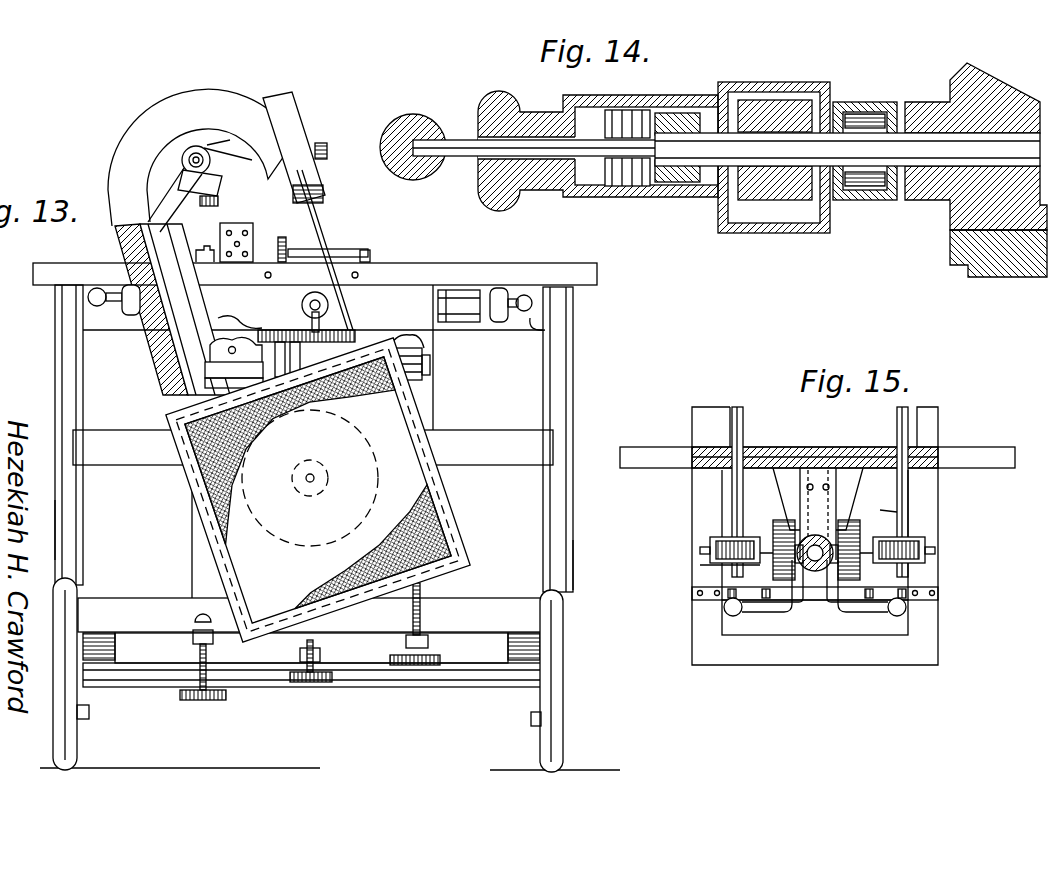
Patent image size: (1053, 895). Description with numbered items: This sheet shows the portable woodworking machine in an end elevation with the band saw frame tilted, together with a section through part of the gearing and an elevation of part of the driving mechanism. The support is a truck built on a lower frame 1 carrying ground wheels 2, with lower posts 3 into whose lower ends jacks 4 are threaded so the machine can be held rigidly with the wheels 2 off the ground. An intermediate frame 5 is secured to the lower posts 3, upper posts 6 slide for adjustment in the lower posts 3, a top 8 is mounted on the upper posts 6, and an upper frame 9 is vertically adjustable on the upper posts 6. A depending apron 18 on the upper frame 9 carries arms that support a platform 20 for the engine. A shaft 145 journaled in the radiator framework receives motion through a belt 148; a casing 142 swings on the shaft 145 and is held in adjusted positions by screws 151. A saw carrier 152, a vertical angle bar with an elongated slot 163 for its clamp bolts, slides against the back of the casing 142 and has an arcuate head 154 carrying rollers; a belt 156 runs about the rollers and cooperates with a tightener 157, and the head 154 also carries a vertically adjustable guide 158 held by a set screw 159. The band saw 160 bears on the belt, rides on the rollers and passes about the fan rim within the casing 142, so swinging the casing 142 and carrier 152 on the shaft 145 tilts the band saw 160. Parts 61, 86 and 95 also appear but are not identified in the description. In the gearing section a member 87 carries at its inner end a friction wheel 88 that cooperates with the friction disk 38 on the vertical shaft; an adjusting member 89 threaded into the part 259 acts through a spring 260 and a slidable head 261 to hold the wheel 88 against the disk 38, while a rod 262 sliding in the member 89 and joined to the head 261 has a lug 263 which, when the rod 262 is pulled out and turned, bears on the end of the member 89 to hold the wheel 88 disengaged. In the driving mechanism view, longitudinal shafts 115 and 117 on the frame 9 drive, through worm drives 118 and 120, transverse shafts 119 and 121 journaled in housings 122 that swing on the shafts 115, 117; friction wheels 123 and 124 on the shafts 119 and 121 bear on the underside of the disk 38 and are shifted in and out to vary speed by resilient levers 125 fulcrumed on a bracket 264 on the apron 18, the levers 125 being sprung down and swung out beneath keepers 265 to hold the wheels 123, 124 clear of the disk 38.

In FIG. 13, the lower frame 1 is at (128, 605).
In FIG. 13, the ground wheels 2 is at (77, 755).
In FIG. 13, the lower posts 3 is at (78, 520).
In FIG. 13, the jacks 4 is at (89, 712).
In FIG. 13, the intermediate frame 5 is at (509, 448).
In FIG. 13, the upper posts 6 is at (55, 372).
In FIG. 13, the top 8 is at (404, 265).
In FIG. 13, the upper frame 9 is at (573, 340).
In FIG. 13, the apron 18 is at (212, 365).
In FIG. 13, the platform 20 is at (300, 314).
In FIG. 13, the friction disk 38 is at (340, 304).
In FIG. 14, the friction disk 38 is at (985, 270).
In FIG. 13, the block 61 is at (281, 240).
In FIG. 14, the collar 86 is at (768, 110).
In FIG. 14, the shaft 87 is at (912, 200).
In FIG. 14, the friction wheel 88 is at (985, 80).
In FIG. 13, the adjusting member 89 is at (498, 323).
In FIG. 14, the adjusting member 89 is at (488, 102).
In FIG. 13, the knob 95 is at (100, 290).
In FIG. 15, the longitudinal shaft 115 is at (748, 405).
In FIG. 15, the longitudinal shaft 117 is at (912, 405).
In FIG. 15, the worm drive 118 is at (728, 565).
In FIG. 13, the transverse shaft 119 is at (222, 318).
In FIG. 15, the transverse shaft 119 is at (700, 550).
In FIG. 15, the worm drive 120 is at (910, 540).
In FIG. 15, the transverse shaft 121 is at (935, 554).
In FIG. 13, the housings 122 is at (215, 380).
In FIG. 15, the housings 122 is at (712, 540).
In FIG. 13, the friction wheel 123 is at (275, 332).
In FIG. 15, the friction wheel 123 is at (780, 520).
In FIG. 15, the friction wheel 124 is at (852, 520).
In FIG. 15, the levers 125 is at (775, 615).
In FIG. 13, the casing 142 is at (468, 535).
In FIG. 13, the shaft 145 is at (310, 482).
In FIG. 13, the belt 148 is at (385, 470).
In FIG. 13, the screws 151 is at (208, 703).
In FIG. 13, the saw carrier 152 is at (168, 242).
In FIG. 13, the arcuate head 154 is at (185, 105).
In FIG. 13, the belt 156 is at (170, 176).
In FIG. 13, the tightener 157 is at (230, 140).
In FIG. 13, the guide 158 is at (323, 176).
In FIG. 13, the set screw 159 is at (322, 142).
In FIG. 13, the band saw 160 is at (330, 240).
In FIG. 13, the elongated slot 163 is at (200, 345).
In FIG. 13, the part 259 is at (462, 292).
In FIG. 14, the part 259 is at (862, 102).
In FIG. 14, the spring 260 is at (630, 195).
In FIG. 14, the slidable head 261 is at (672, 200).
In FIG. 13, the rod 262 is at (528, 296).
In FIG. 14, the rod 262 is at (525, 135).
In FIG. 14, the lug 263 is at (458, 165).
In FIG. 15, the bracket 264 is at (820, 470).
In FIG. 15, the keepers 265 is at (725, 592).